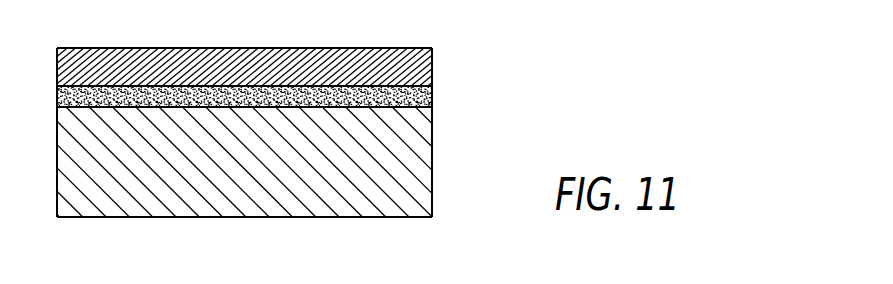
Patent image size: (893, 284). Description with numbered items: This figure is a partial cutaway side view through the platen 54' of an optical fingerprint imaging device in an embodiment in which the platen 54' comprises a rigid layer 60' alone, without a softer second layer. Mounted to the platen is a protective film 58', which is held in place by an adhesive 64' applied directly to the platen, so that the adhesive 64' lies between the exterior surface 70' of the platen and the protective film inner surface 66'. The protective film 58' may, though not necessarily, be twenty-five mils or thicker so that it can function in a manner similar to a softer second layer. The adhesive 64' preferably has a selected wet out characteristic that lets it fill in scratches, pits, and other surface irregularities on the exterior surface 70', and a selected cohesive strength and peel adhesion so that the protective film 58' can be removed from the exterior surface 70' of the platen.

The platen 54' is at (297, 134).
The protective film 58' is at (265, 67).
The rigid layer 60' is at (265, 163).
The adhesive 64' is at (265, 98).
The protective film inner surface 66' is at (328, 54).
The exterior surface of the platen 70' is at (410, 55).